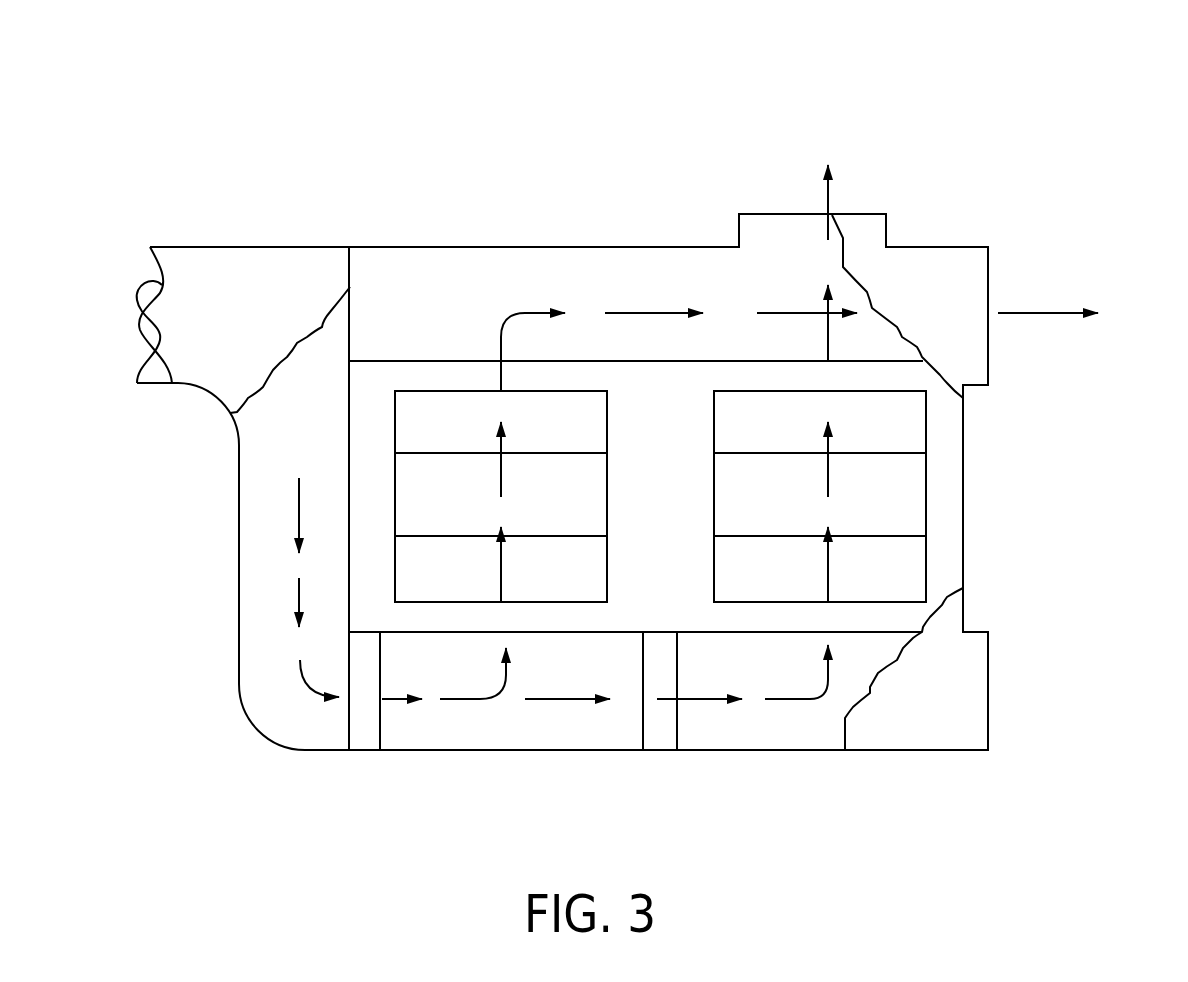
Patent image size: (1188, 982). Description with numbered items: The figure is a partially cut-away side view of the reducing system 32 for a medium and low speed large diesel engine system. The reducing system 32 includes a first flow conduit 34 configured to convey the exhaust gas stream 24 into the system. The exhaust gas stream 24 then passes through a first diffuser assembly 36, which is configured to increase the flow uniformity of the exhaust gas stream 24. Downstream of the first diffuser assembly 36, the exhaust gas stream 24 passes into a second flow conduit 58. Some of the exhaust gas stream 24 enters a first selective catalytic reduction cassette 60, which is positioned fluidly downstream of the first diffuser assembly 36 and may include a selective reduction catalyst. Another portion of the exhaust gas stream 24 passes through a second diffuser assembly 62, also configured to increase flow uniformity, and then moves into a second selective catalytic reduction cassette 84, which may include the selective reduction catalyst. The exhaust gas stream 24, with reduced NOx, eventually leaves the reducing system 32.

The exhaust gas stream 24 is at (830, 203).
The reducing system 32 is at (1011, 124).
The first flow conduit 34 is at (270, 598).
The first diffuser assembly 36 is at (364, 728).
The second flow conduit 58 is at (540, 728).
The first selective catalytic reduction cassette 60 is at (445, 583).
The second diffuser assembly 62 is at (662, 728).
The second selective catalytic reduction cassette 84 is at (870, 583).